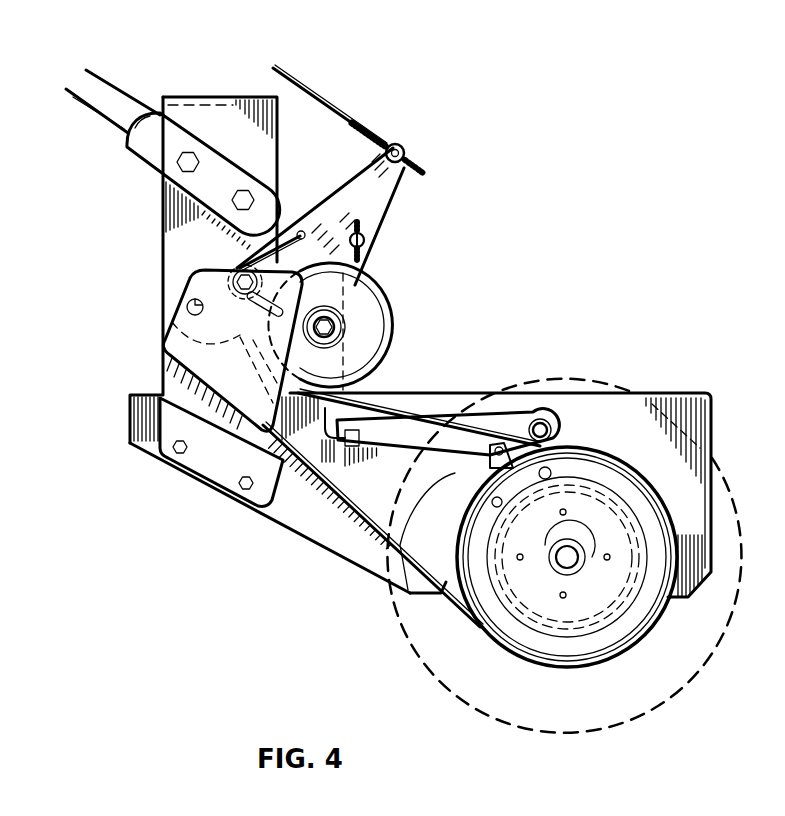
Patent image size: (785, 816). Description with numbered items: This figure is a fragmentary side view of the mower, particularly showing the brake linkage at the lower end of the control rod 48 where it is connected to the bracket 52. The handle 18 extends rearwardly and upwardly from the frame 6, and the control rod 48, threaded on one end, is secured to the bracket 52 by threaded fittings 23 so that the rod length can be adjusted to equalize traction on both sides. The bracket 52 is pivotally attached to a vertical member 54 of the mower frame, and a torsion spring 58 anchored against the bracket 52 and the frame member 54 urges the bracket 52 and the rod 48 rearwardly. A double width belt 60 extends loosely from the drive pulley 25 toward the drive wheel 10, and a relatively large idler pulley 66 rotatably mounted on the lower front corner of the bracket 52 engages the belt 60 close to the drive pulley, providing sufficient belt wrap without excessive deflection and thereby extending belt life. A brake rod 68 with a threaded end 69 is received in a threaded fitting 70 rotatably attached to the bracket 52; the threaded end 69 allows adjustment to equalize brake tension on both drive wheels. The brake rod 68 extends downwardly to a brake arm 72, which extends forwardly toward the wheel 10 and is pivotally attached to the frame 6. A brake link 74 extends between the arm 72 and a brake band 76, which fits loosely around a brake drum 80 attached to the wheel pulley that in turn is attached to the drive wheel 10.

The frame 6 is at (671, 393).
The drive wheel 10 is at (692, 674).
The handle 18 is at (110, 84).
The threaded fittings 23 is at (404, 143).
The drive pulley 25 is at (190, 289).
The control rod 48 is at (344, 111).
The bracket 52 is at (395, 191).
The vertical member 54 is at (163, 232).
The torsion spring 58 is at (284, 228).
The double width belt 60 is at (399, 589).
The idler pulley 66 is at (386, 367).
The brake rod 68 is at (388, 300).
The threaded end 69 is at (371, 259).
The threaded fitting 70 is at (366, 242).
The brake arm 72 is at (488, 419).
The brake link 74 is at (382, 576).
The brake band 76 is at (559, 640).
The brake drum 80 is at (572, 484).